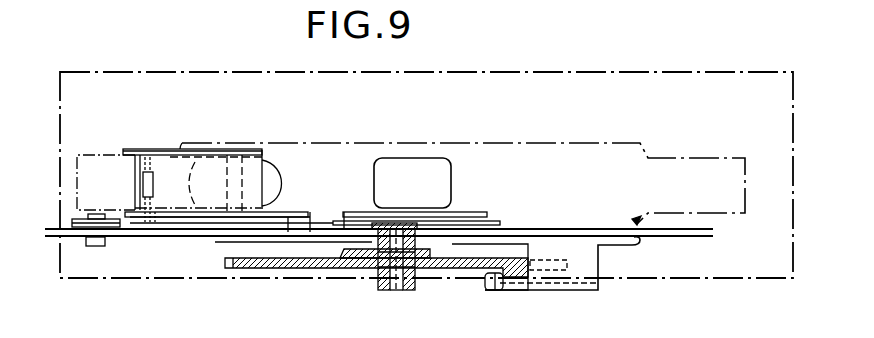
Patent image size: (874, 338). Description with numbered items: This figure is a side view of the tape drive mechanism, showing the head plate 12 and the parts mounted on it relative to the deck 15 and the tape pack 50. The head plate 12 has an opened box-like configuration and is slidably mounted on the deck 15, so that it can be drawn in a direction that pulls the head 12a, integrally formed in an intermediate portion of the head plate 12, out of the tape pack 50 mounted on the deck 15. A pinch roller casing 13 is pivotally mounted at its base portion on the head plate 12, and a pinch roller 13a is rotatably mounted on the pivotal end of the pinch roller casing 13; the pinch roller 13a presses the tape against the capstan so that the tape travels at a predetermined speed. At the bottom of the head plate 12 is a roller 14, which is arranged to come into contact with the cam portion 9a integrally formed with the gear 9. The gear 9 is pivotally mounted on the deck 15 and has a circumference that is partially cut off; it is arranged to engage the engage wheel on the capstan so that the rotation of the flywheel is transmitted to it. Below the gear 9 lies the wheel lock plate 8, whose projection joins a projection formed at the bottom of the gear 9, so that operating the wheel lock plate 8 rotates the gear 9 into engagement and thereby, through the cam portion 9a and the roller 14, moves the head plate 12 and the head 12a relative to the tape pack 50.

The wheel lock plate 8 is at (587, 272).
The gear 9 is at (308, 268).
The cam portion 9a is at (343, 250).
The head plate 12 is at (566, 228).
The head 12a is at (412, 168).
The pinch roller casing 13 is at (178, 172).
The pinch roller 13a is at (272, 168).
The roller 14 is at (413, 240).
The deck 15 is at (163, 238).
The tape pack 50 is at (492, 145).